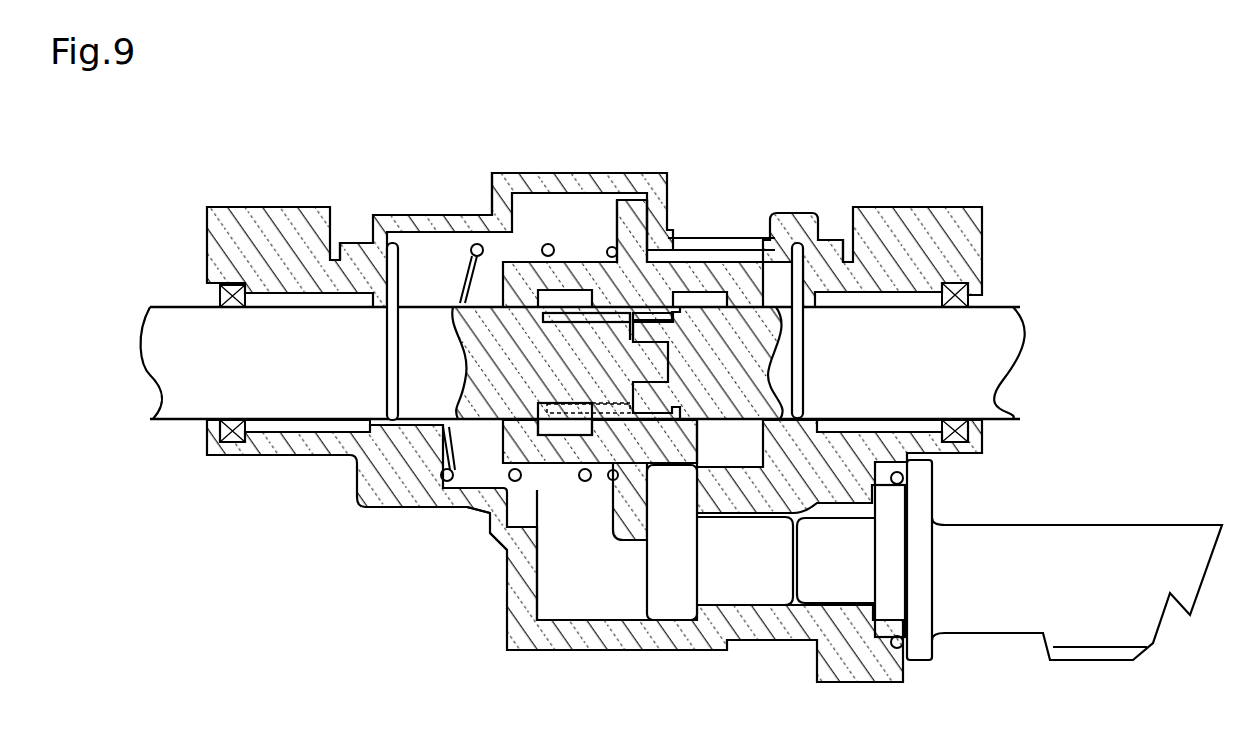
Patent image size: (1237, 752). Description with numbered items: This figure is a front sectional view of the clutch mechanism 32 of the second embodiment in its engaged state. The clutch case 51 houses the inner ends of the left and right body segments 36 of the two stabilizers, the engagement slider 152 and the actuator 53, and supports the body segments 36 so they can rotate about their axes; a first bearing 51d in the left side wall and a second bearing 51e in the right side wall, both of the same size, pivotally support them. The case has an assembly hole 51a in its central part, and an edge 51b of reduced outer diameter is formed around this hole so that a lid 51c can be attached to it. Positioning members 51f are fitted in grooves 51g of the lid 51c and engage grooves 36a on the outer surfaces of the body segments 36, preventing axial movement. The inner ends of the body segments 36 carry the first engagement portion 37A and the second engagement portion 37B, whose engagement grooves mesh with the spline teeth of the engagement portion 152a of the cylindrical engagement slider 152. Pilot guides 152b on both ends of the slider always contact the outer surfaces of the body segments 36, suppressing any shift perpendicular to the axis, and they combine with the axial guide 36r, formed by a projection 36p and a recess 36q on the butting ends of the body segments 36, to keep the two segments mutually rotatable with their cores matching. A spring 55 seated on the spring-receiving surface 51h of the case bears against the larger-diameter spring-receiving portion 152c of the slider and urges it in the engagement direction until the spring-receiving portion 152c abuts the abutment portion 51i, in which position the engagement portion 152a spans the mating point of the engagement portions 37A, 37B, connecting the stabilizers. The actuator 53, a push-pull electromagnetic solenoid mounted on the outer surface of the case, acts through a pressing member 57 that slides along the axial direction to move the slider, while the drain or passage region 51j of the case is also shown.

The clutch mechanism 32 is at (802, 162).
The body segment 36 is at (318, 390).
The groove 36a is at (360, 300).
The projection 36p is at (568, 410).
The recess 36q is at (620, 407).
The axial guide 36r is at (578, 522).
The first engagement portion 37A is at (556, 313).
The second engagement portion 37B is at (652, 313).
The clutch case 51 is at (413, 508).
The assembly hole 51a is at (790, 285).
The edge 51b is at (800, 322).
The lid 51c is at (425, 228).
The first bearing 51d is at (255, 290).
The second bearing 51e is at (965, 285).
The positioning member 51f is at (380, 246).
The groove 51g is at (392, 243).
The spring-receiving surface 51h is at (470, 248).
The abutment portion 51i is at (610, 246).
The drain bore 51j is at (778, 606).
The actuator 53 is at (982, 617).
The spring 55 is at (463, 490).
The pressing member 57 is at (678, 580).
The engagement slider 152 is at (553, 303).
The engagement portion 152a is at (630, 262).
The pilot guide 152b is at (540, 265).
The spring-receiving portion 152c is at (640, 495).